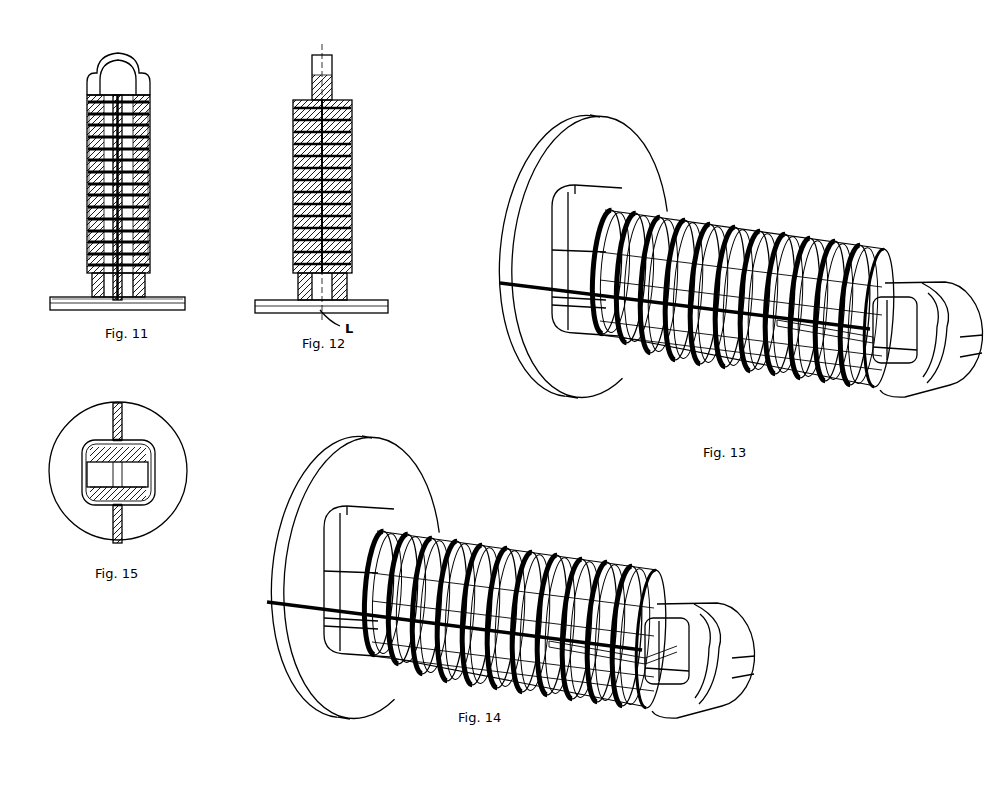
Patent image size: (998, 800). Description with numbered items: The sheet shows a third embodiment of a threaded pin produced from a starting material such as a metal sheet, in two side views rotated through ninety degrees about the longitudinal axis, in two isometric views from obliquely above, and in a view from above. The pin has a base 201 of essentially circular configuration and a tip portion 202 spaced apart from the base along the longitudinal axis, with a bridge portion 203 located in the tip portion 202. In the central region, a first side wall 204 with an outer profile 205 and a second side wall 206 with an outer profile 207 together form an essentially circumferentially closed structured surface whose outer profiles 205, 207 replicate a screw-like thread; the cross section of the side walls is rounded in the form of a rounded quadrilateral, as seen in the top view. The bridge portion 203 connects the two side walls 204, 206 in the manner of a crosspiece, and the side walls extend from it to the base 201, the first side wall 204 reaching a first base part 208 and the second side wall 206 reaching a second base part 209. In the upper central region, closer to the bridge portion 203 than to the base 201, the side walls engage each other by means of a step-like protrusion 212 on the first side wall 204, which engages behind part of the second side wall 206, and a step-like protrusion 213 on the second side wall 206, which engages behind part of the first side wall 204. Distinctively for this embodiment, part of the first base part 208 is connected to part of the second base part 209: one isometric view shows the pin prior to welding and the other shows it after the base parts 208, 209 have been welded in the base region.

In FIG. 11, the base 201 is at (195, 295).
In FIG. 12, the base 201 is at (400, 300).
In FIG. 11, the tip portion 202 is at (85, 56).
In FIG. 12, the tip portion 202 is at (372, 88).
In FIG. 11, the bridge portion 203 is at (128, 56).
In FIG. 12, the bridge portion 203 is at (330, 56).
In FIG. 13, the bridge portion 203 is at (960, 372).
In FIG. 14, the bridge portion 203 is at (727, 660).
In FIG. 11, the first side wall 204 is at (100, 178).
In FIG. 13, the first side wall 204 is at (770, 232).
In FIG. 14, the first side wall 204 is at (515, 619).
In FIG. 15, the first side wall 204 is at (88, 440).
In FIG. 11, the outer profile 205 is at (76, 218).
In FIG. 11, the second side wall 206 is at (150, 175).
In FIG. 13, the second side wall 206 is at (745, 362).
In FIG. 14, the second side wall 206 is at (462, 626).
In FIG. 15, the second side wall 206 is at (140, 507).
In FIG. 11, the outer profile 207 is at (157, 218).
In FIG. 11, the first base part 208 is at (70, 306).
In FIG. 13, the first base part 208 is at (560, 165).
In FIG. 14, the first base part 208 is at (372, 578).
In FIG. 11, the second base part 209 is at (165, 306).
In FIG. 13, the second base part 209 is at (550, 372).
In FIG. 14, the second base part 209 is at (290, 574).
In FIG. 15, the second base part 209 is at (170, 488).
In FIG. 14, the step-like protrusion 212 is at (655, 620).
In FIG. 15, the step-like protrusion 212 is at (100, 505).
In FIG. 14, the step-like protrusion 213 is at (721, 651).
In FIG. 15, the step-like protrusion 213 is at (130, 440).